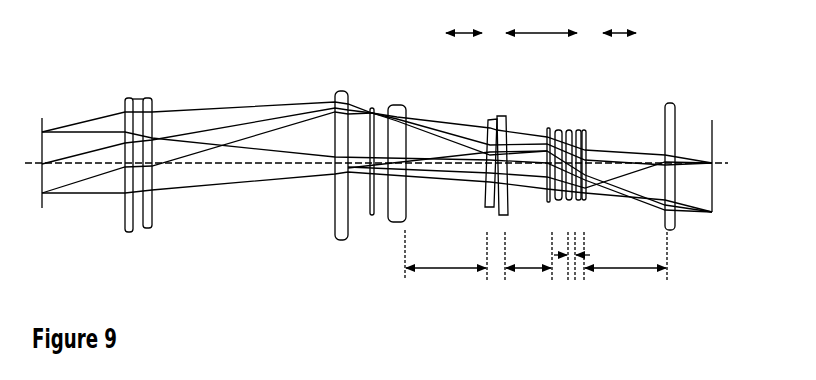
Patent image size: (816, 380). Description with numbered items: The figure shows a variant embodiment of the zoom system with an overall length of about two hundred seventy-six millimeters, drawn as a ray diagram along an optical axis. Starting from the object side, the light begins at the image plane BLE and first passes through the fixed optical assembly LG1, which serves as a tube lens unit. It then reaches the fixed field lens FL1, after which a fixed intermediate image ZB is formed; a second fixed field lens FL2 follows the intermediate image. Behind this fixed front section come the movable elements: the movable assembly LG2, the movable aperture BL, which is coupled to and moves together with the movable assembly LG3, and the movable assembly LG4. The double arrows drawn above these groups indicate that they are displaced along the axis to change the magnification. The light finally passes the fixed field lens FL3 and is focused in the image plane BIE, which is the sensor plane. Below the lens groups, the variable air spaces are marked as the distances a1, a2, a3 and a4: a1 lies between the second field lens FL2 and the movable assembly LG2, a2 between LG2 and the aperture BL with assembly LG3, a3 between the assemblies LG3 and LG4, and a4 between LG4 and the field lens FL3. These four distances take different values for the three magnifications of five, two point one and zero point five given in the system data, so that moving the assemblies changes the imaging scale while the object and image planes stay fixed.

The image plane (object side) BLE is at (44, 122).
The fixed optical assembly (tube lens unit) LG1 is at (140, 96).
The fixed field lens FL1 is at (337, 94).
The fixed intermediate image ZB is at (374, 107).
The second fixed field lens FL2 is at (401, 104).
The movable assembly LG2 is at (495, 104).
The movable aperture BL is at (547, 122).
The movable assembly LG3 is at (573, 130).
The movable assembly LG4 is at (596, 128).
The fixed field lens FL3 is at (670, 100).
The image plane (sensor plane) BIE is at (722, 128).
The distance a1 is at (446, 275).
The distance a2 is at (528, 276).
The distance a3 is at (572, 276).
The distance a4 is at (625, 276).